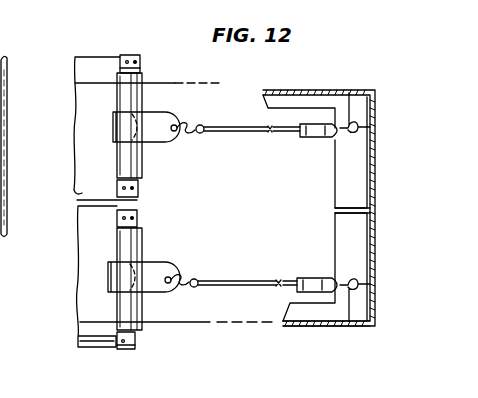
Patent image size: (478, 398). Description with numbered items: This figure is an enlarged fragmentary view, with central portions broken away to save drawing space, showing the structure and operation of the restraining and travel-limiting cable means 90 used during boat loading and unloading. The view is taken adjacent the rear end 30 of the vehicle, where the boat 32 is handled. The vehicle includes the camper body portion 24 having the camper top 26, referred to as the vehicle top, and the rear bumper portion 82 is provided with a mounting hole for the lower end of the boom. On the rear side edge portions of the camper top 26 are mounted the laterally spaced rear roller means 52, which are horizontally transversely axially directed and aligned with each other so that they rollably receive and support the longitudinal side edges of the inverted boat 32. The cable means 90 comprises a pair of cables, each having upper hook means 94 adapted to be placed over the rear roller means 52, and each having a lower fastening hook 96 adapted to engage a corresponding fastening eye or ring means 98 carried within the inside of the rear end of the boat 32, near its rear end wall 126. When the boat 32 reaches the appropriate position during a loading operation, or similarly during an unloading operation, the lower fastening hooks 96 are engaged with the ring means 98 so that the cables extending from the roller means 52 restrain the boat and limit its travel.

The rear bumper portion 82 is at (21, 136).
The rear end 30 is at (17, 98).
The camper body portion 24 is at (97, 59).
The roller means 52 is at (115, 162).
The camper top 26 is at (90, 236).
The upper hook means 94 is at (160, 118).
The restraining and travel-limiting cable means 90 is at (223, 123).
The lower fastening hook 96 is at (350, 91).
The boat 32 is at (293, 326).
The rear end wall 126 is at (372, 187).
The fastening eye or ring means 98 is at (357, 128).